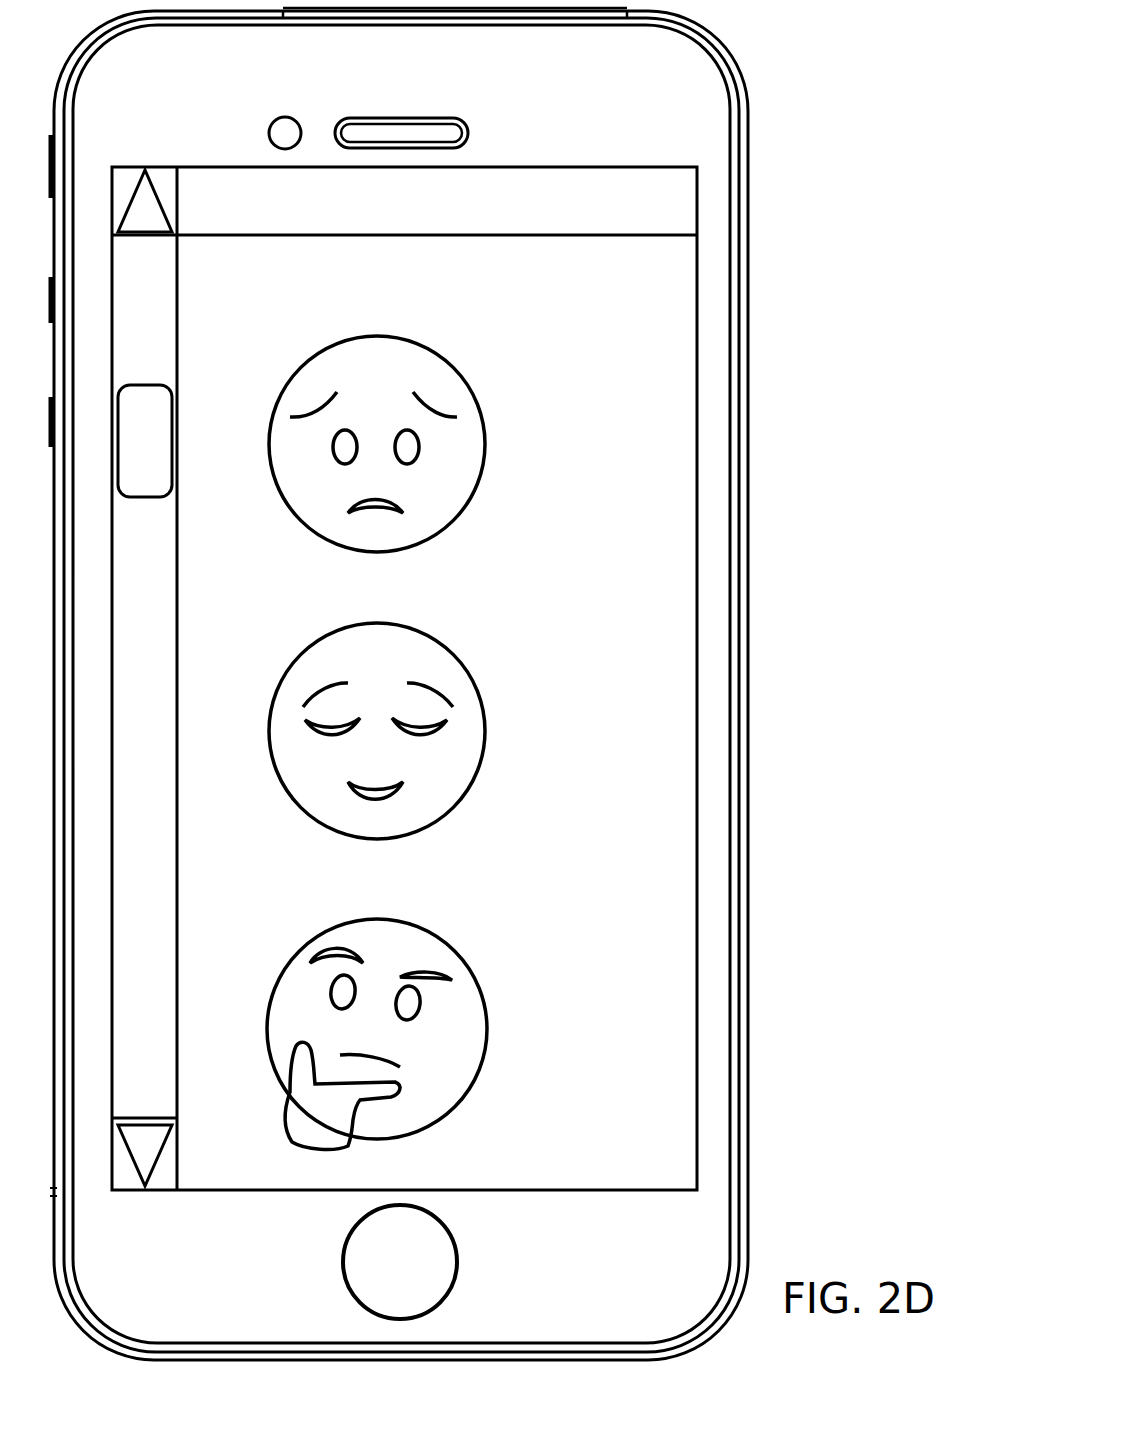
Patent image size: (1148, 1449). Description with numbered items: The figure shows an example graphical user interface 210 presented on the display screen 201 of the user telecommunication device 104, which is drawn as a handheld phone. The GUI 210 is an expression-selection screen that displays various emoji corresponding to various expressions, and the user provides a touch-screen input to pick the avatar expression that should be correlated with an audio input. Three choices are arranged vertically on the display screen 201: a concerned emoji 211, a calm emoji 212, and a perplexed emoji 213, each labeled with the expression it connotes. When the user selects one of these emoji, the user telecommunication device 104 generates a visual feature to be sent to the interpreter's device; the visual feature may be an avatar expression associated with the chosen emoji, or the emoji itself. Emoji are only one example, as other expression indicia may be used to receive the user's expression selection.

The user telecommunication device 104 is at (831, 100).
The display screen 201 is at (667, 547).
The graphical user interface 210 is at (682, 208).
The concerned emoji 211 is at (483, 423).
The calm emoji 212 is at (483, 710).
The perplexed emoji 213 is at (483, 995).